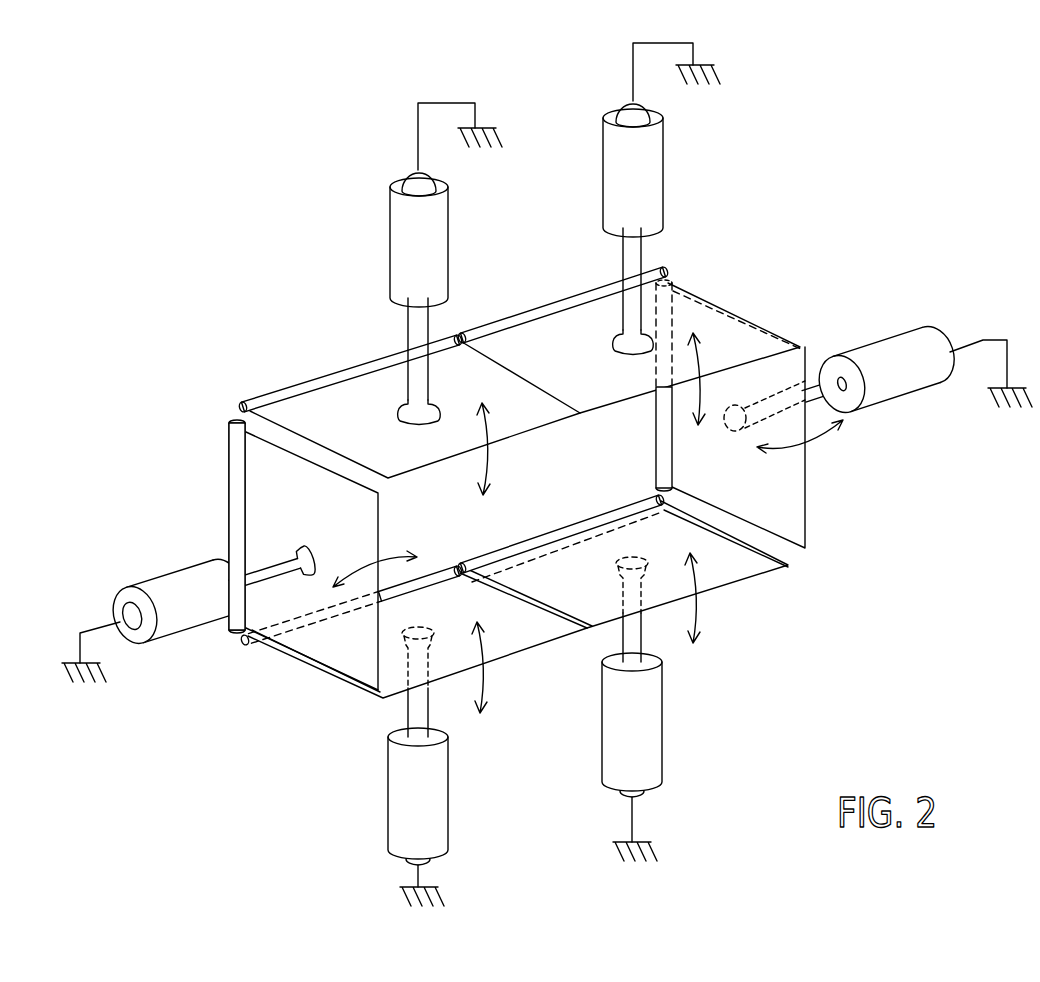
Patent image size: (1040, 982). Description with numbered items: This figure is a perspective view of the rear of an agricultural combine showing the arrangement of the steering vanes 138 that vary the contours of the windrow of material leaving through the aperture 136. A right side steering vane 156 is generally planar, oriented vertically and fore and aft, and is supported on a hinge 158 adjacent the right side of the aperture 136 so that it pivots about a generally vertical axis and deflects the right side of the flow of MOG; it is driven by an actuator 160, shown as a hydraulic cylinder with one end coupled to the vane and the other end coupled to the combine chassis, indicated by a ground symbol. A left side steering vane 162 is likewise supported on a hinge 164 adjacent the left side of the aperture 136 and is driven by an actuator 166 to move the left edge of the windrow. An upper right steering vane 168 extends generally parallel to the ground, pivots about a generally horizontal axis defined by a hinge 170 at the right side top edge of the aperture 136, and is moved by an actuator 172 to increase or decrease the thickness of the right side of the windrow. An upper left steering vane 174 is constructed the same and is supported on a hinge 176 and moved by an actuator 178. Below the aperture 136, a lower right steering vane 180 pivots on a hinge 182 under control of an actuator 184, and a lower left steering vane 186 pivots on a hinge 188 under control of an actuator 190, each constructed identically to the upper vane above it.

The aperture 136 is at (858, 556).
The steering vanes 138 is at (945, 168).
The right side steering vane 156 is at (772, 485).
The hinge 158 is at (667, 320).
The actuator 160 is at (898, 375).
The left side steering vane 162 is at (348, 643).
The hinge 164 is at (231, 472).
The actuator 166 is at (187, 587).
The upper right steering vane 168 is at (578, 357).
The hinge 170 is at (593, 300).
The actuator 172 is at (648, 187).
The upper left steering vane 174 is at (335, 413).
The hinge 176 is at (350, 377).
The actuator 178 is at (413, 252).
The lower right steering vane 180 is at (728, 567).
The hinge 182 is at (600, 517).
The actuator 184 is at (640, 730).
The lower left steering vane 186 is at (512, 633).
The hinge 188 is at (437, 572).
The actuator 190 is at (423, 810).